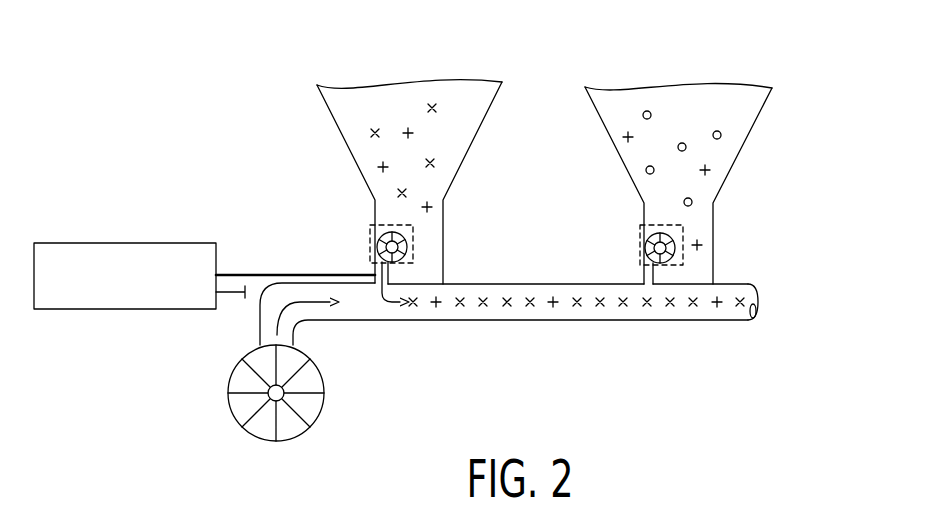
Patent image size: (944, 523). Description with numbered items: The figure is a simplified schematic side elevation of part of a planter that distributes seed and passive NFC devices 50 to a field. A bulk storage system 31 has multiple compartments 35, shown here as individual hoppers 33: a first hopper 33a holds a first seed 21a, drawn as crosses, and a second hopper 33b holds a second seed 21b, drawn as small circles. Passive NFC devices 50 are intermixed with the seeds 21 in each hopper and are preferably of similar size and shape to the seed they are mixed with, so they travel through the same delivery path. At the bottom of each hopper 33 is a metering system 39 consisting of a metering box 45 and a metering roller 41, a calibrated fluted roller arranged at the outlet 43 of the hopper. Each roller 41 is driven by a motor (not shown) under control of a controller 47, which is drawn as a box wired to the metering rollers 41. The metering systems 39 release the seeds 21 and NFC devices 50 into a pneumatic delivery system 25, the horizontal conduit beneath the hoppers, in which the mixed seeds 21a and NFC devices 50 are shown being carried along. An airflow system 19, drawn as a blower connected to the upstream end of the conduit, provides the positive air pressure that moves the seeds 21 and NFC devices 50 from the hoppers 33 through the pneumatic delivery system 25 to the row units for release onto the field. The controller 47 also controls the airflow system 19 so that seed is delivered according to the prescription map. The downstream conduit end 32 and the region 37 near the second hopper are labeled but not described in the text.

The airflow system 19 is at (183, 408).
The seeds 21 is at (467, 120).
The first seed 21a is at (438, 106).
The second seed 21b is at (717, 130).
The pneumatic delivery system 25 is at (540, 322).
The bulk storage system 31 is at (784, 210).
The conduit outlet 32 is at (713, 322).
The hopper 33 is at (473, 165).
The first hopper 33a is at (323, 100).
The second hopper 33b is at (769, 97).
The compartments 35 is at (410, 88).
The outlet region 37 is at (777, 257).
The metering system 39 is at (366, 211).
The metering roller 41 is at (378, 265).
The outlet 43 is at (416, 277).
The metering box 45 is at (365, 232).
The controller 47 is at (127, 339).
The passive NFC devices 50 is at (402, 131).